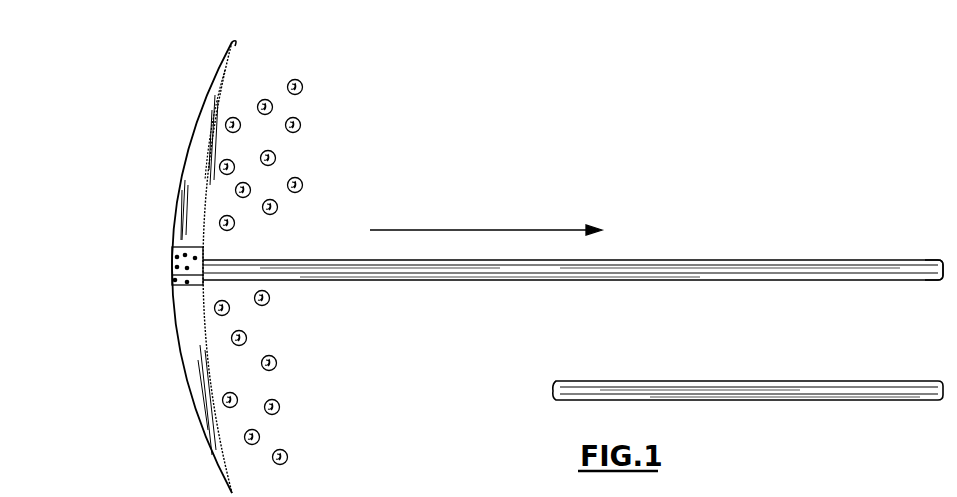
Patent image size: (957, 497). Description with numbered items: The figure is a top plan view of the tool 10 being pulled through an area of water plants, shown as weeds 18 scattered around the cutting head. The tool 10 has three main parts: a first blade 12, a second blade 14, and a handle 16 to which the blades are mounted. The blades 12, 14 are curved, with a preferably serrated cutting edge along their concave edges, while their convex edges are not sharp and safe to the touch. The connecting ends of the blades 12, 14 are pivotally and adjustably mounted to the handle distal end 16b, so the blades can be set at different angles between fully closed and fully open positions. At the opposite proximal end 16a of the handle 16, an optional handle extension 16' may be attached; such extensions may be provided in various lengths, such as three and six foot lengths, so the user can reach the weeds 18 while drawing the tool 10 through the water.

The tool 10 is at (662, 190).
The first blade 12 is at (212, 92).
The second blade 14 is at (192, 351).
The handle 16 is at (573, 299).
The proximal end of handle 16a is at (933, 261).
The handle distal end 16b is at (172, 265).
The handle extension 16' is at (748, 365).
The weeds 18 is at (317, 105).